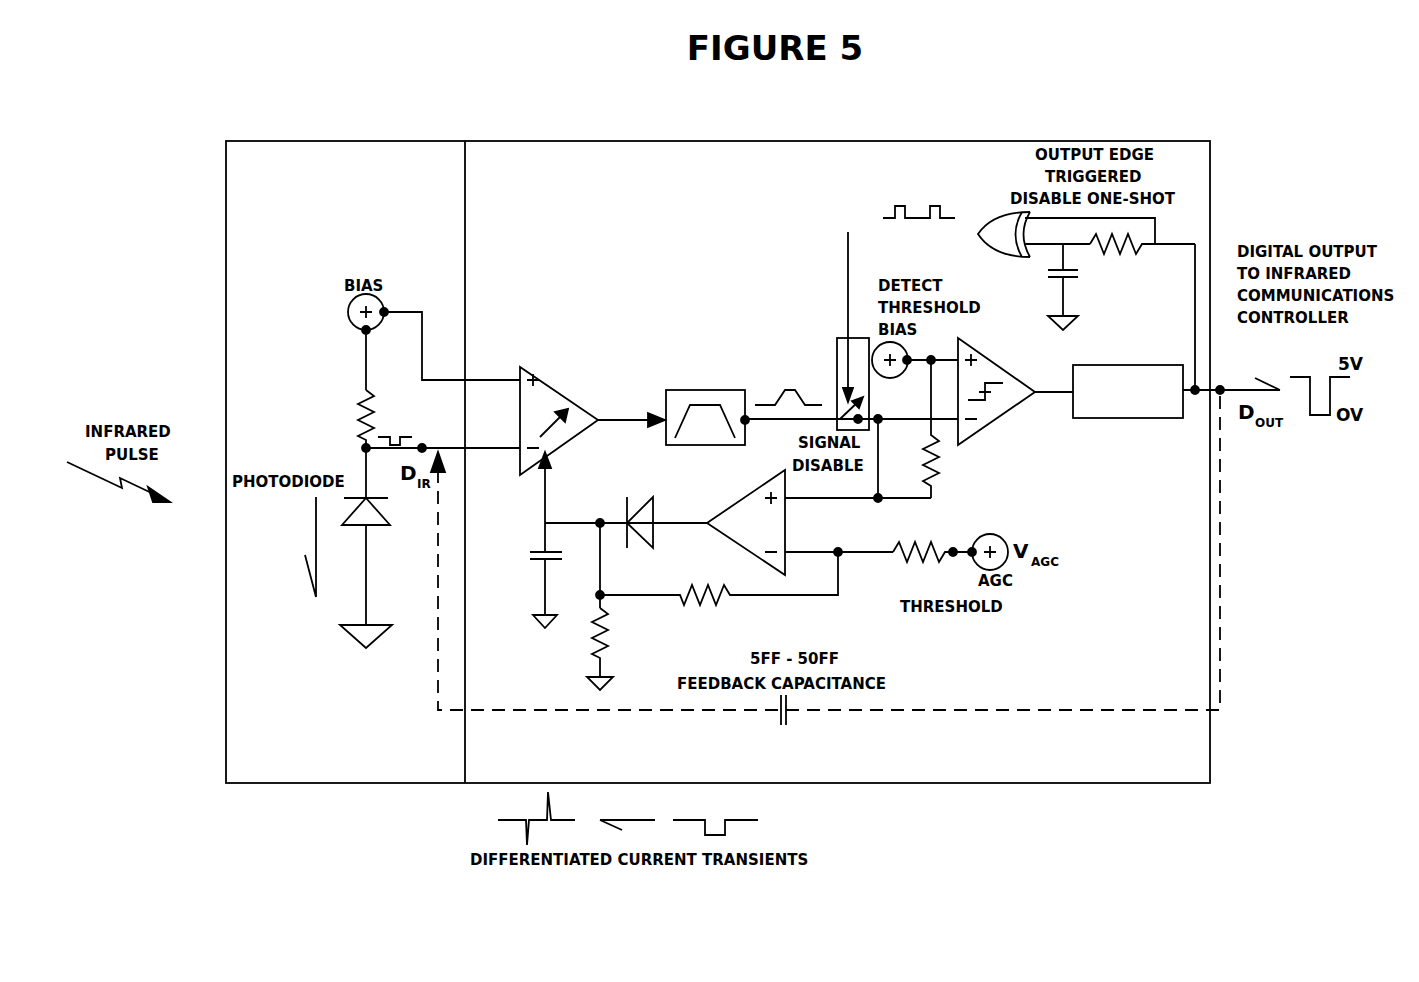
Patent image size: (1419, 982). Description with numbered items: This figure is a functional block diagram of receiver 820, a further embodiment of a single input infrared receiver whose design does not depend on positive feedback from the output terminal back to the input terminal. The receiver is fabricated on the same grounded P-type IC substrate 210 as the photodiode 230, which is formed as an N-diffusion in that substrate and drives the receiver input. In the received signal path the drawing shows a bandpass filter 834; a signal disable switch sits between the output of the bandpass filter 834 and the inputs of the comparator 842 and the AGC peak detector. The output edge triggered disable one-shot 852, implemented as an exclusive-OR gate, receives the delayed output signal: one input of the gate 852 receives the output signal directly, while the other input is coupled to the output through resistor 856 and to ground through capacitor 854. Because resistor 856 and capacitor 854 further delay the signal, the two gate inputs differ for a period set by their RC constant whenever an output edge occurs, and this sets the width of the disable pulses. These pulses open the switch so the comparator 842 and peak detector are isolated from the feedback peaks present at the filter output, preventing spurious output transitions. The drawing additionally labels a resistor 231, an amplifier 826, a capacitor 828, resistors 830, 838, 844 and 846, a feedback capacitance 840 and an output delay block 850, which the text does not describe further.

The IC substrate 210 is at (356, 141).
The receiver 820 is at (668, 230).
The photodiode 230 is at (374, 528).
The bias resistor 231 is at (374, 392).
The variable gain amplifier 826 is at (540, 378).
The gain control capacitor 828 is at (535, 550).
The resistor 830 is at (606, 640).
The bandpass filter 834 is at (726, 390).
The feedback resistor 838 is at (695, 602).
The feedback capacitance 840 is at (790, 717).
The comparator 842 is at (1000, 420).
The AGC threshold resistor 844 is at (900, 560).
The resistor 846 is at (940, 462).
The output delay 850 is at (1100, 365).
The output edge triggered disable one-shot 852 is at (978, 226).
The capacitor 854 is at (1050, 280).
The resistor 856 is at (1104, 250).